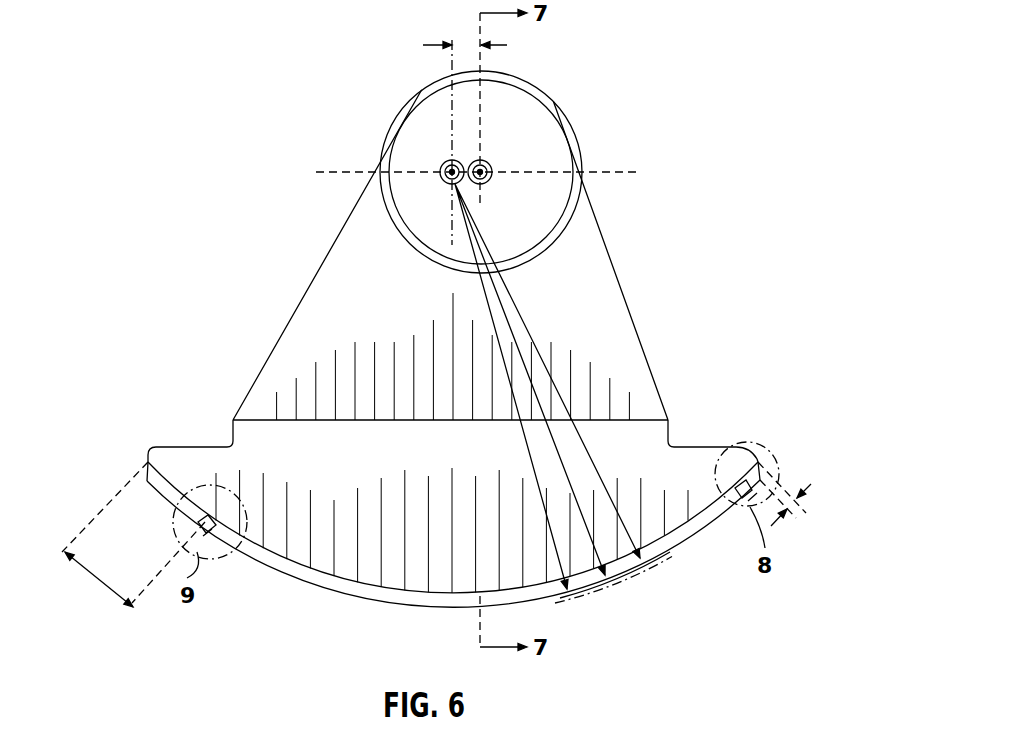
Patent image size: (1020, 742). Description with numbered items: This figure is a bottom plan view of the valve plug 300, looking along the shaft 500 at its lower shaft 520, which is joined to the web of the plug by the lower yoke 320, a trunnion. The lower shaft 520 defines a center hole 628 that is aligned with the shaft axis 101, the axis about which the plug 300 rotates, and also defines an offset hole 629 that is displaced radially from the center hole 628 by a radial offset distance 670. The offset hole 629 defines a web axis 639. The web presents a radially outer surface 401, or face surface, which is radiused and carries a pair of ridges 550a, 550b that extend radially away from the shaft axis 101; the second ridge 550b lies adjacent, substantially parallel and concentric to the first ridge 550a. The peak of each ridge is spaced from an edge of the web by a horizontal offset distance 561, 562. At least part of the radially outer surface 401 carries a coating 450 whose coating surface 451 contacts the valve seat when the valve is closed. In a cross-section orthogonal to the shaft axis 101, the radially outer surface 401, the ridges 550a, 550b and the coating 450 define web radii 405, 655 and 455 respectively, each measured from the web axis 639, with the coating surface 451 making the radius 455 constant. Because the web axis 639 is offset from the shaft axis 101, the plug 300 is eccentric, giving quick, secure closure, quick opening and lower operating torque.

The valve plug 300 is at (237, 46).
The radial offset distance 670 is at (444, 40).
The shaft 500 is at (524, 166).
The lower shaft 520 is at (523, 90).
The web axis 639 is at (447, 162).
The offset hole 629 is at (443, 180).
The shaft axis 101 is at (487, 163).
The center hole 628 is at (487, 182).
The lower yoke 320 is at (597, 298).
The web radius 405 is at (577, 410).
The web radius 655 is at (567, 465).
The web radius 455 is at (565, 470).
The coating 450 is at (597, 592).
The coating surface 451 is at (645, 577).
The radially outer surface 401 is at (345, 588).
The first ridge 550a is at (180, 523).
The second ridge 550b is at (220, 542).
The horizontal offset distance 561 is at (811, 484).
The horizontal offset distance 562 is at (100, 583).